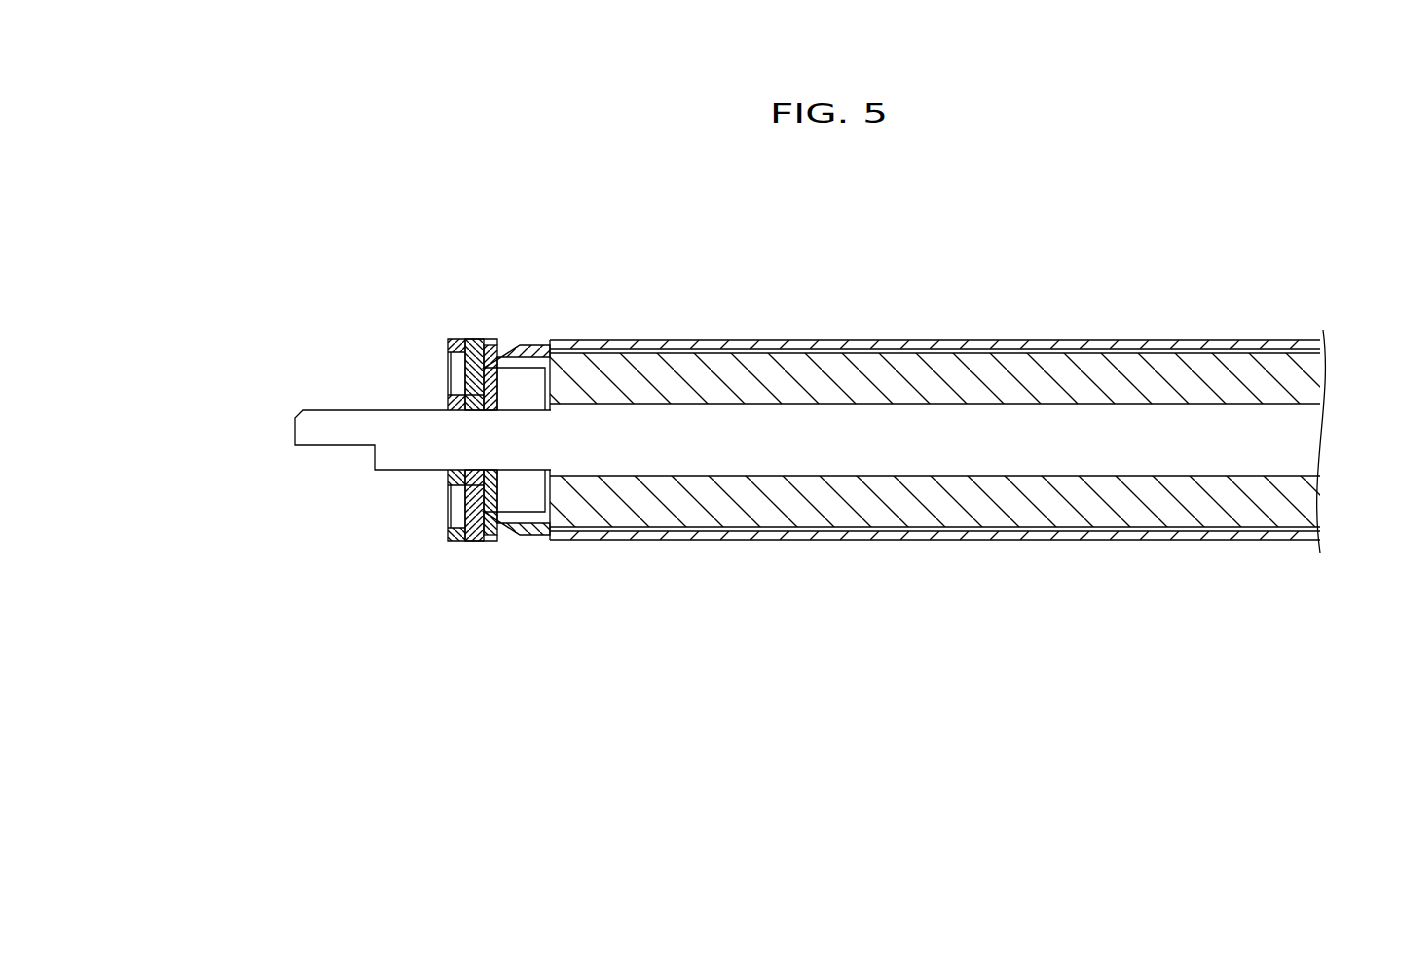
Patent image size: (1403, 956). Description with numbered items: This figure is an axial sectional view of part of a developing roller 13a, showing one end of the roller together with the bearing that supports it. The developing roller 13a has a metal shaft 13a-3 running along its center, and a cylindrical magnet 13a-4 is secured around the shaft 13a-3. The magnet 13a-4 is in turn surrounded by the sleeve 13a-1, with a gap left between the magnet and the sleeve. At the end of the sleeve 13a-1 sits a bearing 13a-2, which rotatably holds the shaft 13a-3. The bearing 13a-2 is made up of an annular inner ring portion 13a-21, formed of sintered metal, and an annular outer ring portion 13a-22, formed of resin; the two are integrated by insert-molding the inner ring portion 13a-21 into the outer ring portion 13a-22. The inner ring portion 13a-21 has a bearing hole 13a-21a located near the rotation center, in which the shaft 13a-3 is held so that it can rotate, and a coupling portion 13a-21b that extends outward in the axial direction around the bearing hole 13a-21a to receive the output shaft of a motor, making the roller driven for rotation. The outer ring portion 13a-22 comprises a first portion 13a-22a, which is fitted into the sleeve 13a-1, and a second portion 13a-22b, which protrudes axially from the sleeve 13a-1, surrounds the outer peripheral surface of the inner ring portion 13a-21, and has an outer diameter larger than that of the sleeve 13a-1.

The developing roller 13a is at (872, 304).
The sleeve 13a-1 is at (927, 533).
The bearing 13a-2 is at (328, 512).
The inner ring portion 13a-21 is at (468, 507).
The bearing hole 13a-21a is at (468, 463).
The coupling portion 13a-21b is at (458, 368).
The outer ring portion 13a-22 is at (620, 266).
The first portion 13a-22a is at (525, 348).
The second portion 13a-22b is at (462, 339).
The shaft 13a-3 is at (685, 460).
The magnet 13a-4 is at (807, 517).